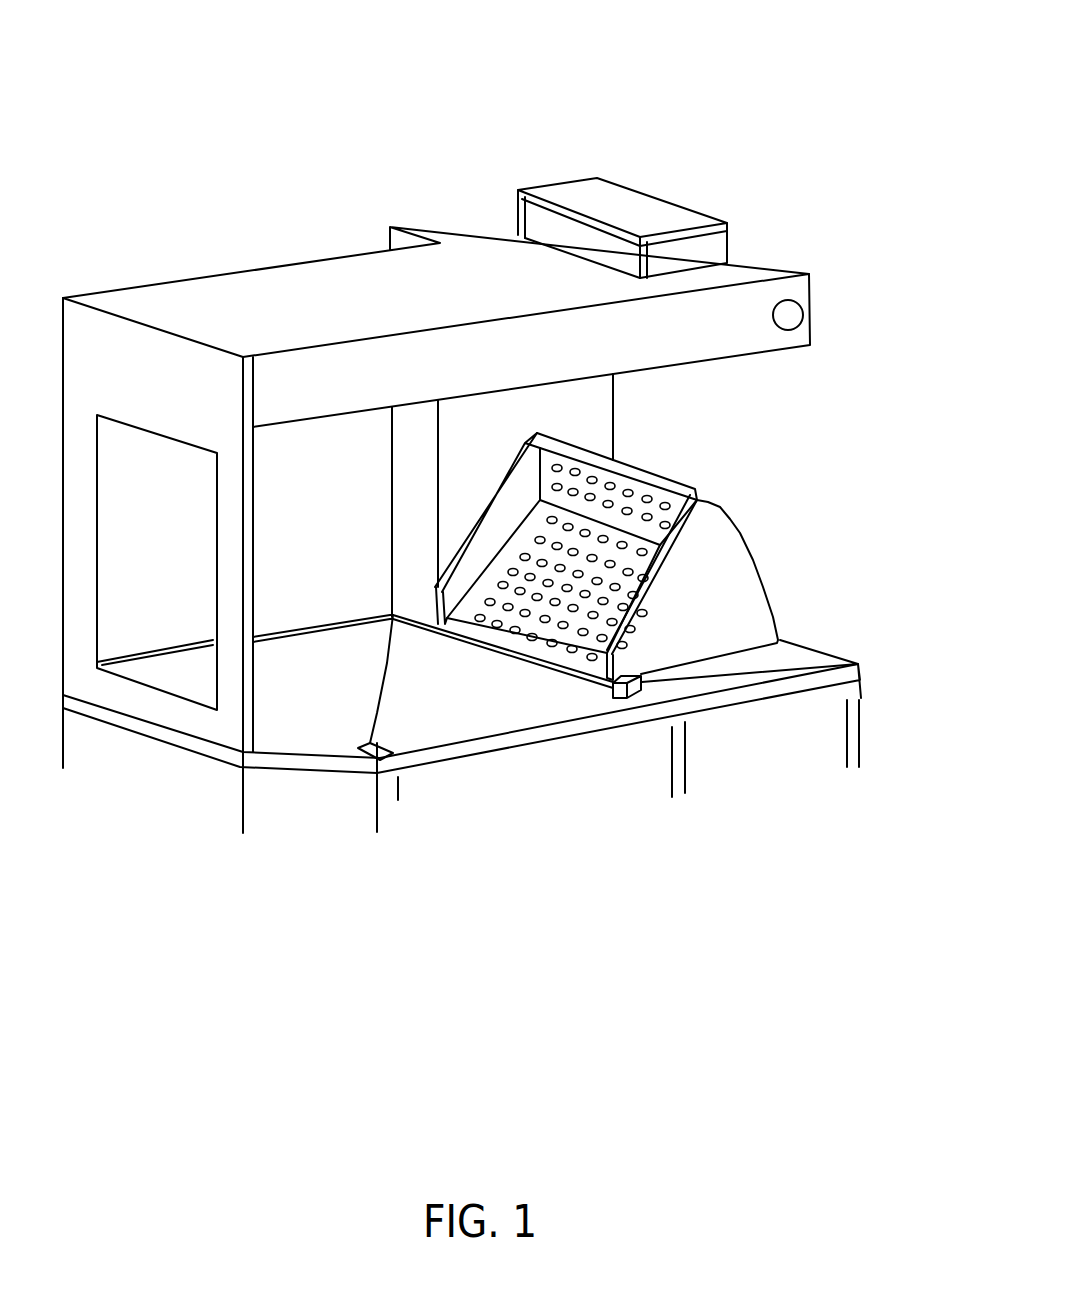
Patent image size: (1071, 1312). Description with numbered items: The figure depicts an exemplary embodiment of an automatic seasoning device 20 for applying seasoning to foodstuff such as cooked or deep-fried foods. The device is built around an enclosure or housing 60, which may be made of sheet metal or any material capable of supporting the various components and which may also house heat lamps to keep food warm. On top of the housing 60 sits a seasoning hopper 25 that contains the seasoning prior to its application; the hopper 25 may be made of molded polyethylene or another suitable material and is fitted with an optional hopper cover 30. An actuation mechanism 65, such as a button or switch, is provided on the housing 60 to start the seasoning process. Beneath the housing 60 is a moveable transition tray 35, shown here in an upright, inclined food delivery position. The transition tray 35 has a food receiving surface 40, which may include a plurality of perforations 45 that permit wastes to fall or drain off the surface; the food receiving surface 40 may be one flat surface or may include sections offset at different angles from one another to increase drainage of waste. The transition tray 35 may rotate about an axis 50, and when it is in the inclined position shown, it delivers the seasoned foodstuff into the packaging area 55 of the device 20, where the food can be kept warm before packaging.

The automatic seasoning device 20 is at (790, 67).
The seasoning hopper 25 is at (708, 252).
The hopper cover 30 is at (622, 200).
The transition tray 35 is at (745, 593).
The food receiving surface 40 is at (570, 538).
The perforations 45 is at (495, 627).
The axis 50 is at (642, 688).
The packaging area 55 is at (357, 750).
The housing 60 is at (168, 298).
The actuation mechanism 65 is at (792, 313).